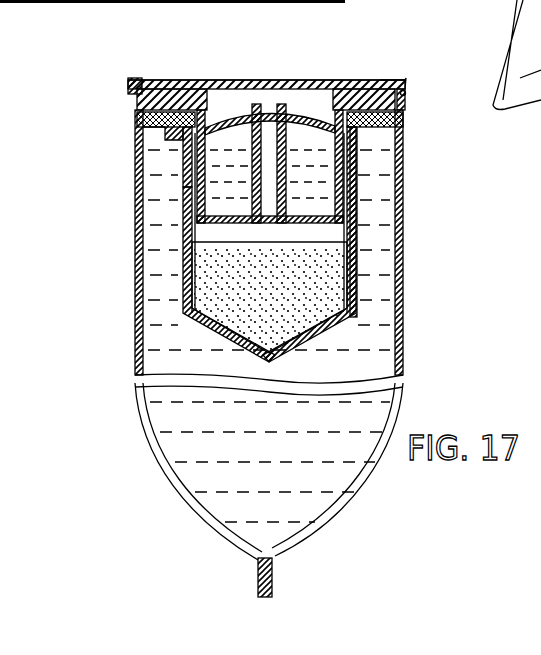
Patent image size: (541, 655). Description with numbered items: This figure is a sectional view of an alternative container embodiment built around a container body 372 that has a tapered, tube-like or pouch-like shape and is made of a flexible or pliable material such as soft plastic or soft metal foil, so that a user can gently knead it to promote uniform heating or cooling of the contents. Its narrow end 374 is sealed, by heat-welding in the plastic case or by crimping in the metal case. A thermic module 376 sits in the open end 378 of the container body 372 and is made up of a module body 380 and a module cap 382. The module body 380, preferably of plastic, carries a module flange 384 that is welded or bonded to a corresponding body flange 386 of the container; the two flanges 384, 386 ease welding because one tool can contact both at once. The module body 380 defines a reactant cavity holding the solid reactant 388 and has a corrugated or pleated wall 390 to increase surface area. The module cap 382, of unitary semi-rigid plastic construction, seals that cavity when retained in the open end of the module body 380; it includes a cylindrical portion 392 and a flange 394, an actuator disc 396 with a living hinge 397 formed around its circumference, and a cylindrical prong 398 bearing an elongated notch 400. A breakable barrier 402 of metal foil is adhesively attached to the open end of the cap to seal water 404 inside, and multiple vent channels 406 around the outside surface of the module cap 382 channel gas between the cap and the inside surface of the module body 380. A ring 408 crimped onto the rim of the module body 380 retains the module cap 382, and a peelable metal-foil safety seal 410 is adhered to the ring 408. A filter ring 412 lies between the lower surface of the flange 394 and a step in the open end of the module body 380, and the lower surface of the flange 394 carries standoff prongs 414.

The container body 372 is at (396, 305).
The narrow end 374 is at (257, 580).
The thermic module 376 is at (376, 74).
The open end 378 is at (138, 110).
The module body 380 is at (358, 221).
The module cap 382 is at (352, 83).
The module flange 384 is at (155, 128).
The body flange 386 is at (173, 133).
The solid reactant 388 is at (348, 268).
The corrugated or pleated wall 390 is at (182, 278).
The cylindrical portion 392 is at (340, 182).
The flange 394 is at (404, 96).
The actuator disc 396 is at (302, 113).
The living hinge 397 is at (212, 115).
The cylindrical prong 398 is at (252, 168).
The elongated notch 400 is at (272, 162).
The breakable barrier 402 is at (220, 225).
The water 404 is at (313, 155).
The vent channels 406 is at (190, 192).
The ring 408 is at (138, 82).
The safety seal 410 is at (270, 80).
The filter ring 412 is at (187, 118).
The standoff prongs 414 is at (402, 122).